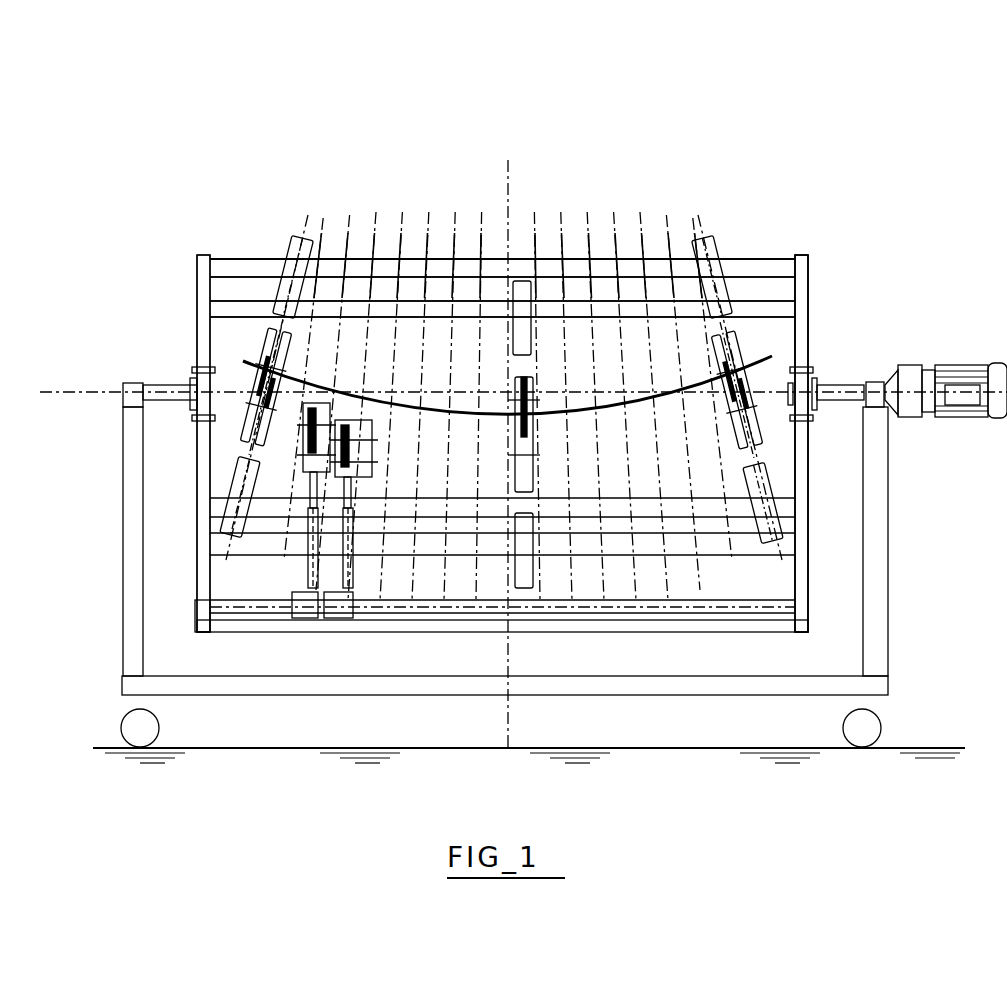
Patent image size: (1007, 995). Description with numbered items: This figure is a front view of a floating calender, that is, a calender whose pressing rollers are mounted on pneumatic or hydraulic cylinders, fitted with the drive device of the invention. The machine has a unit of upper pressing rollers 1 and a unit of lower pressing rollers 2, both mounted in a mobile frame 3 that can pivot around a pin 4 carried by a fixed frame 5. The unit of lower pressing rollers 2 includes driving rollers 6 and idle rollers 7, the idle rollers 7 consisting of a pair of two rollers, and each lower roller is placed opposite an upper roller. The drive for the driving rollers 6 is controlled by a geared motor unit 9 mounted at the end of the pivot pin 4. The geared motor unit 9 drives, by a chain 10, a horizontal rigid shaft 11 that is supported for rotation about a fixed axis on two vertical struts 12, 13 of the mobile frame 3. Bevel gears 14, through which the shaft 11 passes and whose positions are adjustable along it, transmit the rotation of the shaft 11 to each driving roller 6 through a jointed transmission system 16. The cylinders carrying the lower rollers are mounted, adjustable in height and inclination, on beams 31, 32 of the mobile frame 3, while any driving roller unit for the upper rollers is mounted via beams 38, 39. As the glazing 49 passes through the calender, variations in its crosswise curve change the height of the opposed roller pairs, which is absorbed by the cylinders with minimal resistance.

The upper pressing rollers 1 is at (262, 344).
The lower pressing rollers 2 is at (240, 414).
The mobile frame 3 is at (824, 286).
The pin 4 is at (152, 385).
The frame 5 is at (133, 540).
The driving rollers 6 is at (304, 474).
The idle rollers 7 is at (530, 466).
The geared motor unit 9 is at (953, 372).
The chain 10 is at (795, 465).
The shaft 11 is at (735, 607).
The vertical strut 12 is at (200, 570).
The vertical strut 13 is at (805, 572).
The bevel gears 14 is at (336, 612).
The jointed transmission system 16 is at (358, 538).
The beam 31 is at (607, 545).
The beam 32 is at (640, 505).
The beam 38 is at (735, 265).
The beam 39 is at (768, 306).
The glazing 49 is at (600, 404).